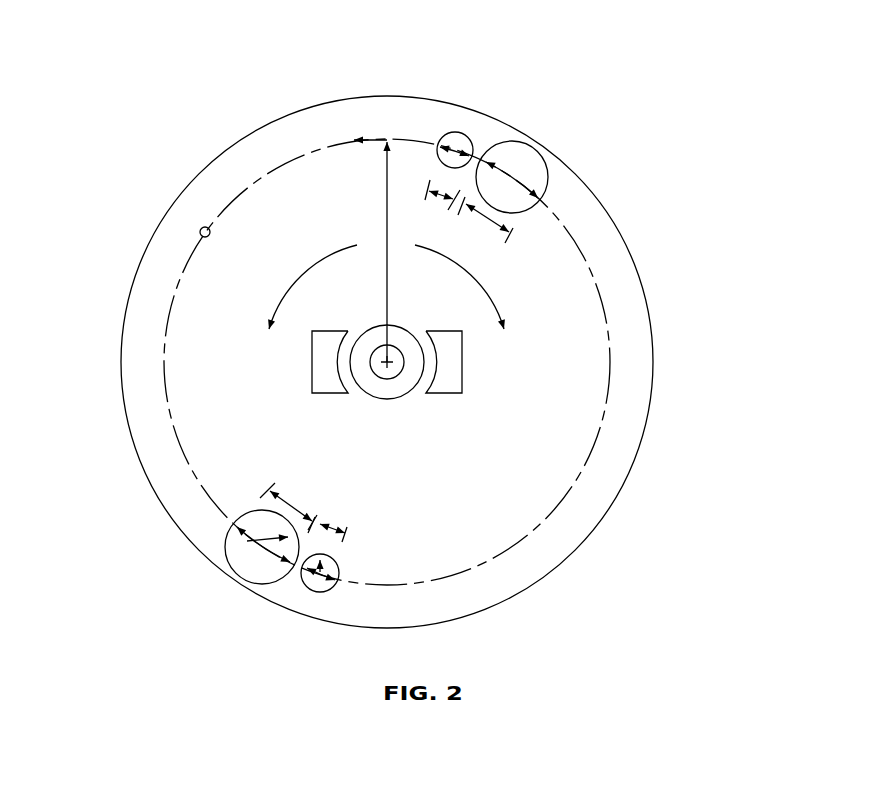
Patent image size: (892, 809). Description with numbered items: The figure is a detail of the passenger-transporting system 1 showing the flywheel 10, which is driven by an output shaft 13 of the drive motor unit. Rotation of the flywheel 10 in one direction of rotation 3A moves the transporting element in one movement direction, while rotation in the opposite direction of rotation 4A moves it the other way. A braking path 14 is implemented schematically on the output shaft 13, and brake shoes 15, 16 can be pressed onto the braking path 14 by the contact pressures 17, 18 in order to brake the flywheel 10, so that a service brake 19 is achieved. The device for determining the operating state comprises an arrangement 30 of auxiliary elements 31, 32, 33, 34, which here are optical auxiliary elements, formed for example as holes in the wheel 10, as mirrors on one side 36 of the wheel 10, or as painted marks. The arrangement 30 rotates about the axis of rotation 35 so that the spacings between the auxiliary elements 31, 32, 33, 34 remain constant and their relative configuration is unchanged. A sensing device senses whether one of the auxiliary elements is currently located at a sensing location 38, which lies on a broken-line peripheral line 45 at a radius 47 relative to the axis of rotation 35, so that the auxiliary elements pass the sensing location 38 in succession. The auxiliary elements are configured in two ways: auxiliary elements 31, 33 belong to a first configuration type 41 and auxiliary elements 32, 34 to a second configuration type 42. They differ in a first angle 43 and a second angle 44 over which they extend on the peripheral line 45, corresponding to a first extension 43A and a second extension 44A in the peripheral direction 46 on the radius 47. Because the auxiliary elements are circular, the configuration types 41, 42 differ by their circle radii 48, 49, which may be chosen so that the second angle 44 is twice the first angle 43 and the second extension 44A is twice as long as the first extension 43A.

The passenger-transporting system 1 is at (643, 103).
The flywheel 10 is at (581, 520).
The output shaft 13 is at (395, 377).
The braking path 14 is at (370, 402).
The brake shoe 15 is at (325, 394).
The brake shoe 16 is at (449, 394).
The contact pressure 17 is at (310, 362).
The contact pressure 18 is at (464, 362).
The service brake 19 is at (490, 431).
The arrangement 30 is at (375, 180).
The auxiliary element 31 is at (452, 136).
The auxiliary element 32 is at (513, 163).
The auxiliary element 33 is at (313, 583).
The auxiliary element 34 is at (248, 570).
The axis of rotation 35 is at (383, 358).
The side of the wheel 36 is at (588, 346).
The sensing location 38 is at (201, 228).
The first configuration type 41 is at (356, 356).
The second configuration type 42 is at (368, 361).
The first angle 43 is at (443, 204).
The first extension 43A is at (460, 147).
The second angle 44 is at (482, 215).
The second extension 44A is at (525, 180).
The peripheral line 45 is at (593, 270).
The peripheral direction 46 is at (368, 139).
The radius 47 is at (388, 173).
The circle radius 48 is at (326, 560).
The circle radius 49 is at (268, 534).
The direction of rotation 3A is at (300, 277).
The direction of rotation 4A is at (470, 277).